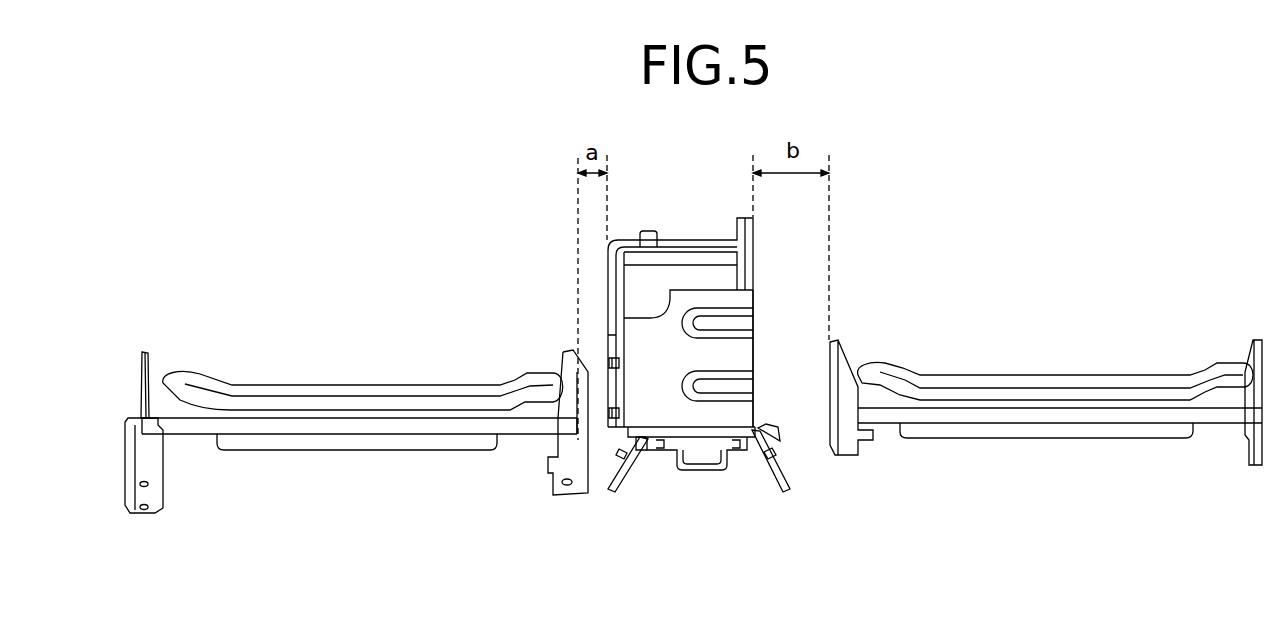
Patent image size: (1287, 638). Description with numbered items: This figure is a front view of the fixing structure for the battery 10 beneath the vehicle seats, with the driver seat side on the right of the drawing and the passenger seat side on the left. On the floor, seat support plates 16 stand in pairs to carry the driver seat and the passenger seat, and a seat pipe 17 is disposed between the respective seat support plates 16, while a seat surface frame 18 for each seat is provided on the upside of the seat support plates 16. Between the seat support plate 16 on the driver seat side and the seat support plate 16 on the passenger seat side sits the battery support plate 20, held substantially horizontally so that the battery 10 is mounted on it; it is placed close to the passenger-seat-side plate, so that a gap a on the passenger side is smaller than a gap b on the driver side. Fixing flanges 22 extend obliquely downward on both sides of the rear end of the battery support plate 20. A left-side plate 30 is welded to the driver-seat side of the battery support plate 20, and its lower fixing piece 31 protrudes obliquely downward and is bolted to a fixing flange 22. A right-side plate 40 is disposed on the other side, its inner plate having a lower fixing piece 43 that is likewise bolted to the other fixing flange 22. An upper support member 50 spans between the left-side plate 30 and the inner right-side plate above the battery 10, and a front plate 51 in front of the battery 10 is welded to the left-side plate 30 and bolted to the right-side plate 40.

The battery 10 is at (680, 280).
The seat support plate 16 is at (153, 513).
The seat pipe 17 is at (343, 432).
The seat surface frame 18 is at (287, 405).
The battery support plate 20 is at (740, 440).
The fixing flange 22 is at (632, 465).
The left-side plate 30 is at (753, 283).
The lower fixing piece 31 is at (770, 426).
The right-side plate 40 is at (608, 272).
The lower fixing piece 43 is at (613, 453).
The upper support member 50 is at (668, 238).
The front plate 51 is at (665, 410).